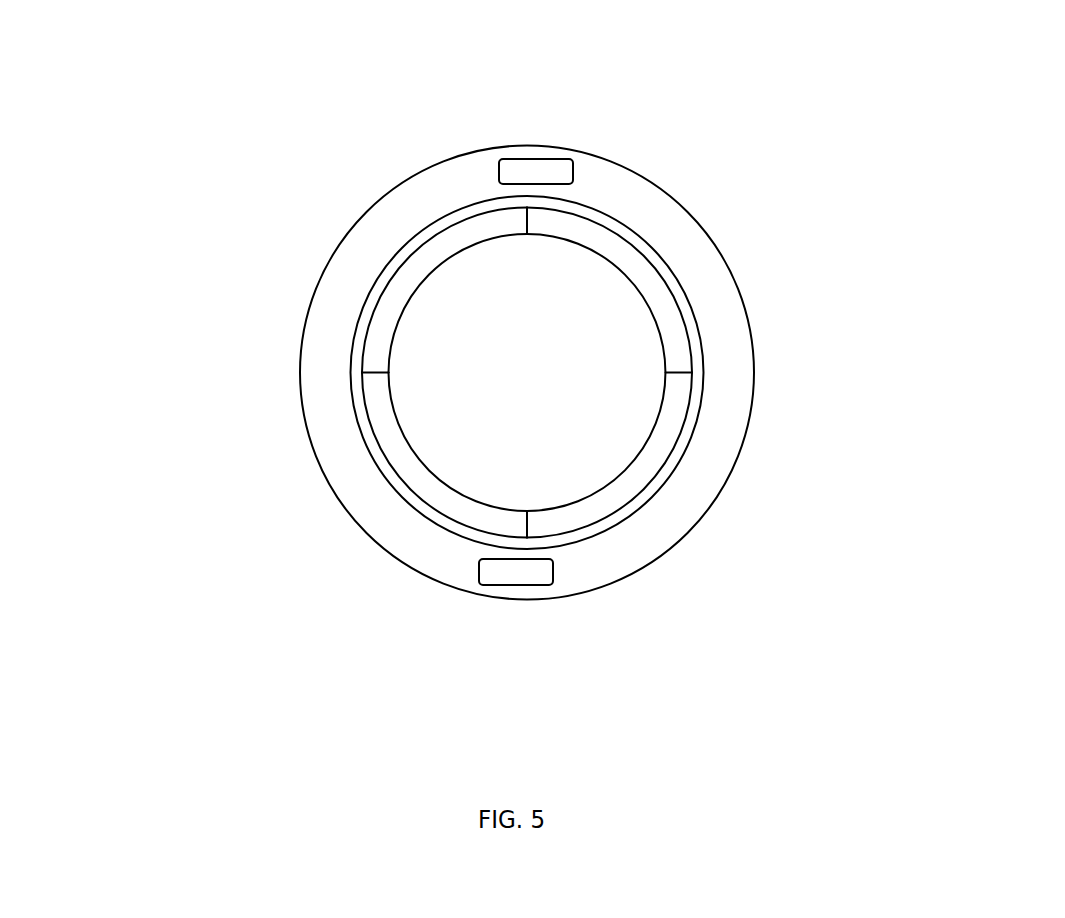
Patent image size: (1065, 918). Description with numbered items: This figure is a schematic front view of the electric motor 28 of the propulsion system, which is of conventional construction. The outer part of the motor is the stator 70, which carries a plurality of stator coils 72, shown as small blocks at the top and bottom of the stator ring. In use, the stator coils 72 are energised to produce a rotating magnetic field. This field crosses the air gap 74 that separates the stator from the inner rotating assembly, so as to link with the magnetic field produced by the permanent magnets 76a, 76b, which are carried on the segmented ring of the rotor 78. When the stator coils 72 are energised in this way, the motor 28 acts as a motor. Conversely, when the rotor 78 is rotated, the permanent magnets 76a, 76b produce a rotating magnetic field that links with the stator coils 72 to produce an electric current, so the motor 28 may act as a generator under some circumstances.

The electric motor 28 is at (852, 229).
The stator 70 is at (745, 441).
The stator coils 72 is at (538, 158).
The air gap 74 is at (438, 523).
The permanent magnet 76a is at (380, 319).
The permanent magnet 76b is at (380, 412).
The rotor 78 is at (373, 441).